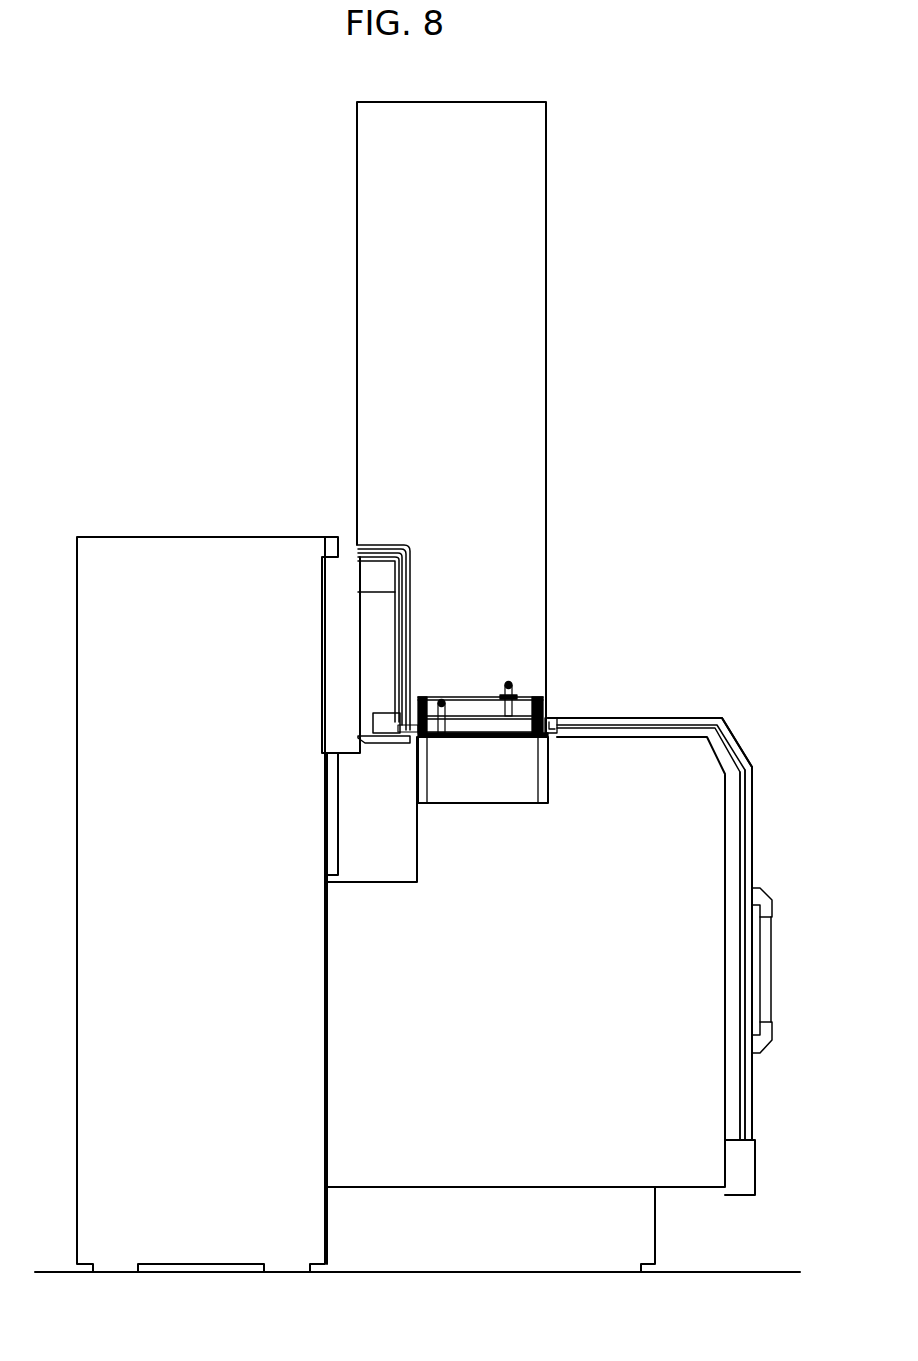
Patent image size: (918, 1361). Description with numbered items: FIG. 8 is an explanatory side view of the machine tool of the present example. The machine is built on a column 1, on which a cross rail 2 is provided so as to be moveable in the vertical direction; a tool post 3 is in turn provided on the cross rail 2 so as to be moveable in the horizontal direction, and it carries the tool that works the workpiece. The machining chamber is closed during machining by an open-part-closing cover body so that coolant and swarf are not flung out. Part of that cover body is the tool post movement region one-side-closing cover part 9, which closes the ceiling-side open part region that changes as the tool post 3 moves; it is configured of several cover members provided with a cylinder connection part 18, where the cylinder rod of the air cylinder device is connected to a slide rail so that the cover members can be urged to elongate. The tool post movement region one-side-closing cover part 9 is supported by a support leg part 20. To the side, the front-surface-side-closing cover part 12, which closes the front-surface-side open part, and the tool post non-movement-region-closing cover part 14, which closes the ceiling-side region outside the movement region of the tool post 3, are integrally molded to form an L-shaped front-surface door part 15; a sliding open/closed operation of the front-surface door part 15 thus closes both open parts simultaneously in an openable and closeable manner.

The column 1 is at (173, 537).
The cross rail 2 is at (410, 577).
The tool post 3 is at (548, 165).
The tool post movement region one-side-closing cover part 9 is at (512, 657).
The front-surface-side-closing cover part 12 is at (750, 847).
The tool post non-movement-region-closing cover part 14 is at (628, 718).
The front-surface door part 15 is at (745, 735).
The cylinder connection part 18 is at (508, 681).
The support leg part 20 is at (541, 780).